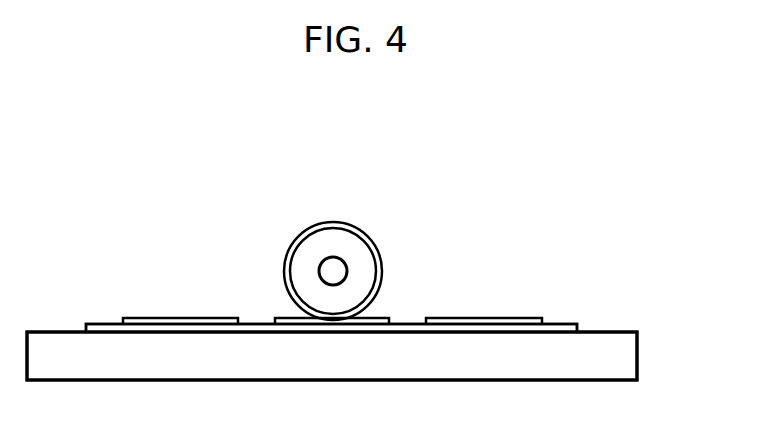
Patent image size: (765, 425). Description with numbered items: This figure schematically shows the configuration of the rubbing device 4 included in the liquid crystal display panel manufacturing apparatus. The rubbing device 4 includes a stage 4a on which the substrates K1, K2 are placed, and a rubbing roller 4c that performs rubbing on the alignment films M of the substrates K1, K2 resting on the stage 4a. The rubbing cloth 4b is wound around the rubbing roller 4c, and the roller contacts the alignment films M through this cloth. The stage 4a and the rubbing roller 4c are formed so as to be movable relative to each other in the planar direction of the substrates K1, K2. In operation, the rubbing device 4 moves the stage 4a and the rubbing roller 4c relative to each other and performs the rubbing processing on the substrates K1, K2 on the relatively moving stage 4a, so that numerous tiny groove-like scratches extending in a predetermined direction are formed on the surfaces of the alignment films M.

The rubbing device 4 is at (574, 133).
The stage 4a is at (630, 360).
The rubbing cloth 4b is at (328, 222).
The rubbing roller 4c is at (360, 258).
The substrate K1 is at (575, 323).
The substrate K2 is at (331, 328).
The alignment film M is at (140, 318).